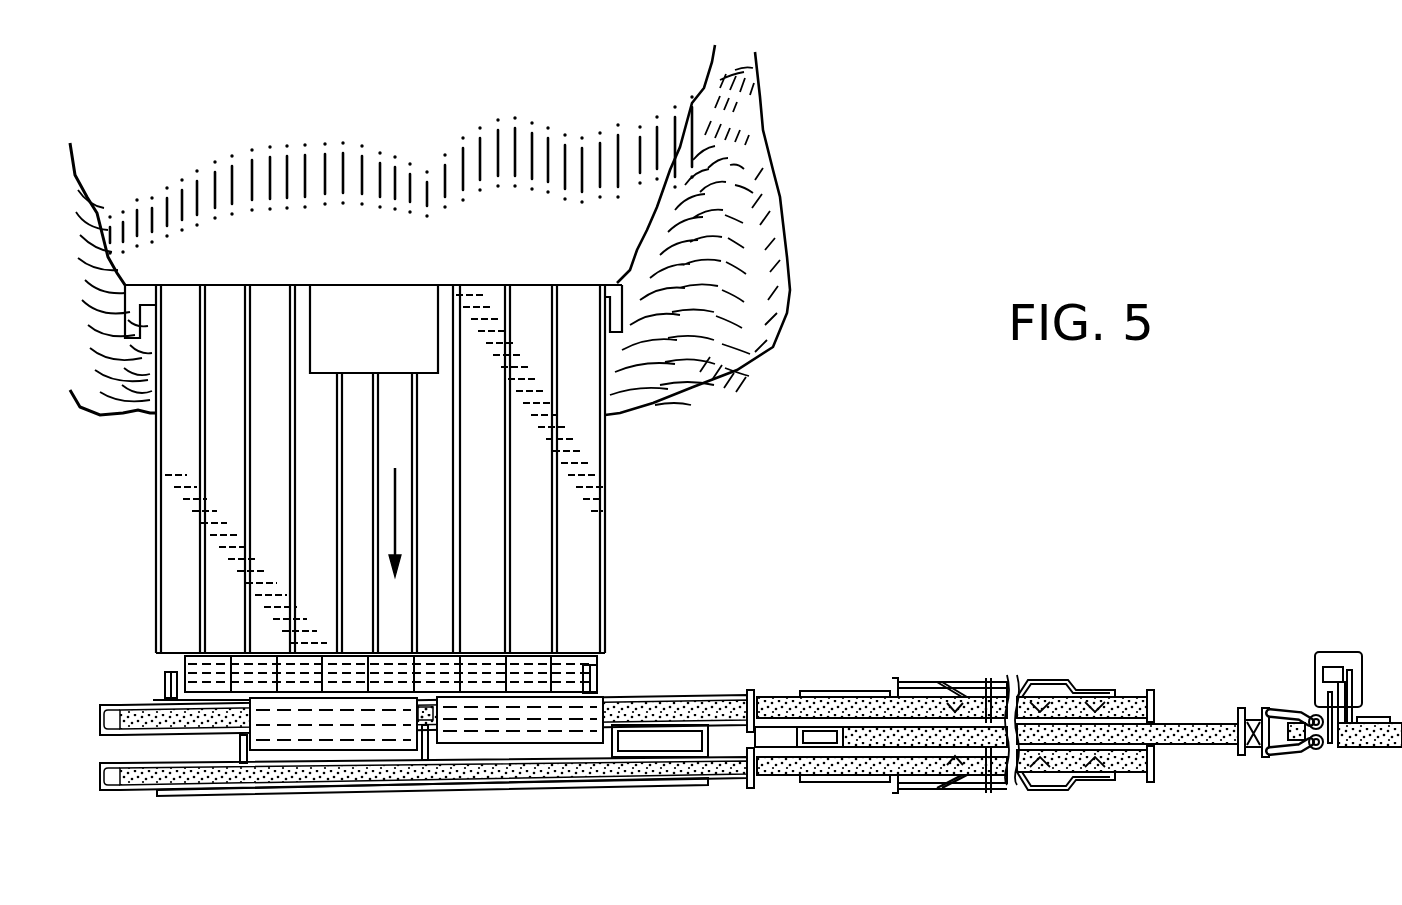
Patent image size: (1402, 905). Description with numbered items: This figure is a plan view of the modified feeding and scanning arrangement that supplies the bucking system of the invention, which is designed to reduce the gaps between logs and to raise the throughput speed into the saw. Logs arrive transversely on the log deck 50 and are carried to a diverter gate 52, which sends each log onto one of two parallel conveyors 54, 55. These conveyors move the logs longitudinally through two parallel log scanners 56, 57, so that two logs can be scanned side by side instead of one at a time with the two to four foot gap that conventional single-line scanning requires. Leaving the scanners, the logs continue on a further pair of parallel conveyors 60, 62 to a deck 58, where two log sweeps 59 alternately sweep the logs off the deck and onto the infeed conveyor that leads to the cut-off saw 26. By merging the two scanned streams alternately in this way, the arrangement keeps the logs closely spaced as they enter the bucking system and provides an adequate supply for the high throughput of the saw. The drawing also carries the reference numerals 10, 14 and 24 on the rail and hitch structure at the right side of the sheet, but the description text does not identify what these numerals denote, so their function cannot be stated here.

The hitch assembly 10 is at (1237, 692).
The tongue rod 14 is at (1205, 744).
The tow rail 24 is at (1375, 746).
The cut-off saw 26 is at (1356, 651).
The log deck 50 is at (608, 542).
The diverter gate 52 is at (347, 736).
The parallel conveyor 54 is at (127, 793).
The parallel conveyor 55 is at (128, 700).
The log scanner 56 is at (752, 790).
The log scanner 57 is at (752, 690).
The deck 58 is at (977, 722).
The log sweeps 59 is at (1070, 679).
The parallel conveyor 60 is at (843, 698).
The parallel conveyor 62 is at (833, 768).